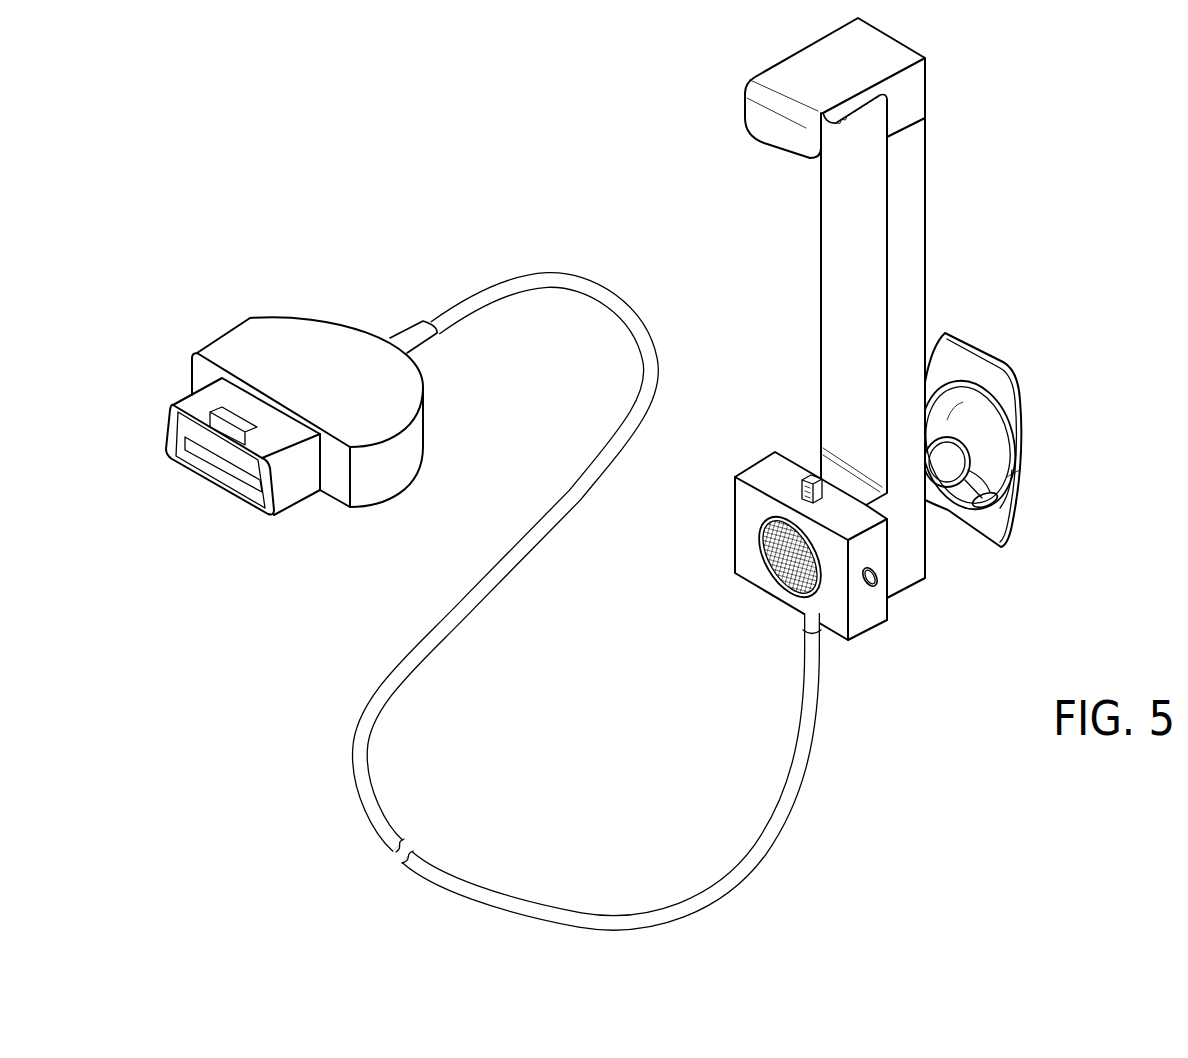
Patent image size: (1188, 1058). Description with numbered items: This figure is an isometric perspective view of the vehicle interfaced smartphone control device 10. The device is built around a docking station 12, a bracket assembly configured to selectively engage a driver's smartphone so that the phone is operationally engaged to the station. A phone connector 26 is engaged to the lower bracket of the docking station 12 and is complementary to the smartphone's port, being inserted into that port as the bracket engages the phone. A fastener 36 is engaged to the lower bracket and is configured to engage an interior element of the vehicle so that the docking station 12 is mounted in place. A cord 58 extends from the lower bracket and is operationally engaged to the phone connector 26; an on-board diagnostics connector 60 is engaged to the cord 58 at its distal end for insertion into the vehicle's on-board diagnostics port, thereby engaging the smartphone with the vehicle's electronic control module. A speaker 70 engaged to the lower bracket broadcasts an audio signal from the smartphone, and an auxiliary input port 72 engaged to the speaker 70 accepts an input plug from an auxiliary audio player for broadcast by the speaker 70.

The vehicle interfaced smartphone control device 10 is at (624, 470).
The docking station 12 is at (934, 203).
The phone connector 26 is at (800, 468).
The fastener 36 is at (990, 337).
The cord 58 is at (778, 846).
The on-board diagnostics connector 60 is at (303, 495).
The speaker 70 is at (775, 557).
The auxiliary input port 72 is at (888, 596).